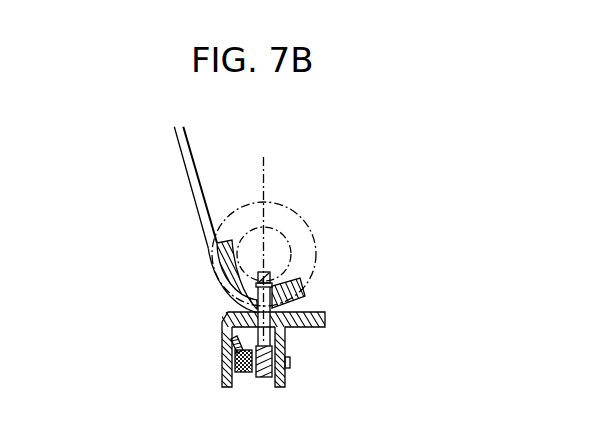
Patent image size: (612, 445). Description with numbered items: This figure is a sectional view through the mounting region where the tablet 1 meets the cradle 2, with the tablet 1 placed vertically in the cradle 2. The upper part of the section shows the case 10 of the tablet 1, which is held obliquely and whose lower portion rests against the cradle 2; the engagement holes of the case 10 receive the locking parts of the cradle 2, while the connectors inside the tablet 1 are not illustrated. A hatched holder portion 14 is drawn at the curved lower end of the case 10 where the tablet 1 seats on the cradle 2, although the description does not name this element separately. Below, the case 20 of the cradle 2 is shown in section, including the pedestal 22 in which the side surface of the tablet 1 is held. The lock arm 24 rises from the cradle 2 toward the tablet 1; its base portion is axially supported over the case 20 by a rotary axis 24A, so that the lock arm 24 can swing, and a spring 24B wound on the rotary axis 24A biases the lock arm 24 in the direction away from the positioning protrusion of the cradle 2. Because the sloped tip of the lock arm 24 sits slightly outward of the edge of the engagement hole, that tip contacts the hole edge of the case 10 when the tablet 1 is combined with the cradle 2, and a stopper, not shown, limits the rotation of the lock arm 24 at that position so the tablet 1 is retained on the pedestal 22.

The tablet 1 is at (172, 184).
The case 10 is at (199, 222).
The blade holder 14 is at (300, 280).
The lock arm 24 is at (268, 273).
The cradle 2 is at (189, 339).
The case 20 is at (222, 364).
The pedestal 22 is at (325, 311).
The rotary axis 24A is at (291, 362).
The spring 24B is at (247, 373).